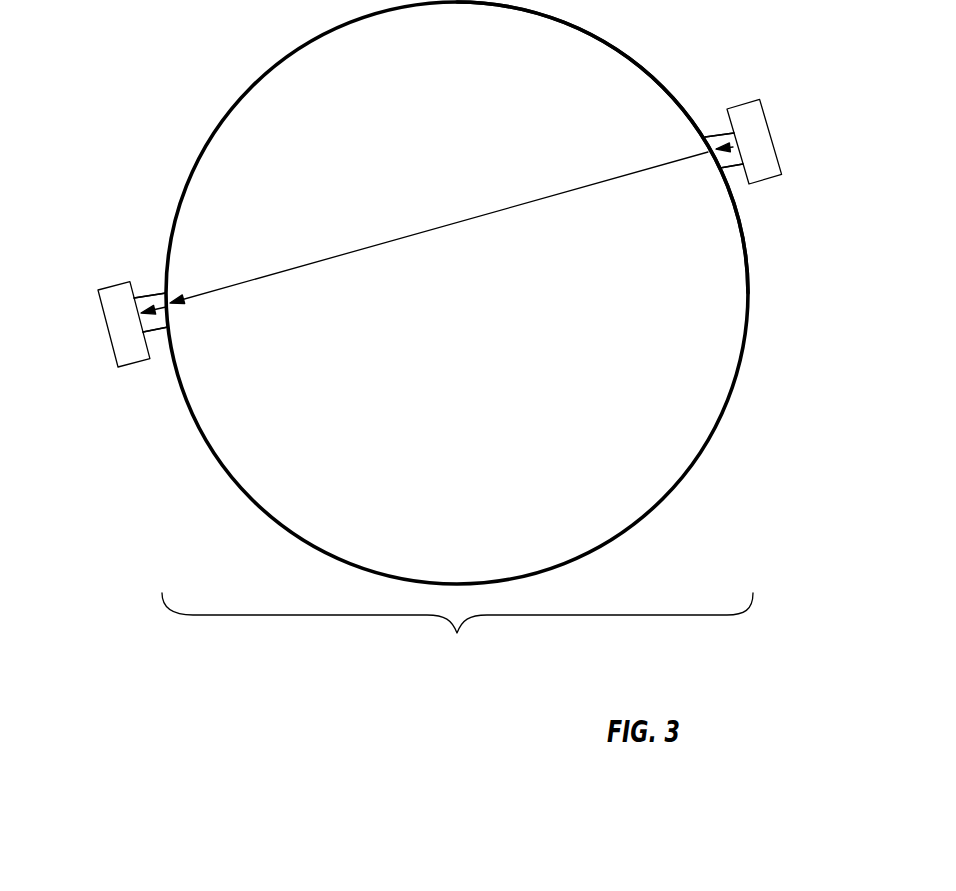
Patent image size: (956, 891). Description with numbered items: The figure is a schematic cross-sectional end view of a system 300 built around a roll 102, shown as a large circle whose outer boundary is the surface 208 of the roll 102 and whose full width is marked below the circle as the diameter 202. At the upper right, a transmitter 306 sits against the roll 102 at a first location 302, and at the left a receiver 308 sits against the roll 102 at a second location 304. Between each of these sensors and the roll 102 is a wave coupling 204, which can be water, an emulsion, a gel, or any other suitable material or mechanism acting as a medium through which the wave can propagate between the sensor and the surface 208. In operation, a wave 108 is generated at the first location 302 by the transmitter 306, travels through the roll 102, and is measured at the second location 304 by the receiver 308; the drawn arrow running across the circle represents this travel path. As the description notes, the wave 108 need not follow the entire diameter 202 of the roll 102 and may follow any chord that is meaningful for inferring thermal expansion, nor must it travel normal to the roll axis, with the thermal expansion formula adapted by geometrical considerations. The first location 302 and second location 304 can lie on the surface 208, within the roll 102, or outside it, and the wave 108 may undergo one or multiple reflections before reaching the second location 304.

The system 300 is at (118, 112).
The roll 102 is at (457, 293).
The surface of the roll 208 is at (727, 434).
The diameter 202 is at (457, 632).
The wave 108 is at (298, 268).
The transmitter 306 is at (753, 128).
The first location 302 is at (708, 118).
The wave coupling 204 is at (730, 163).
The receiver 308 is at (112, 308).
The second location 304 is at (146, 283).